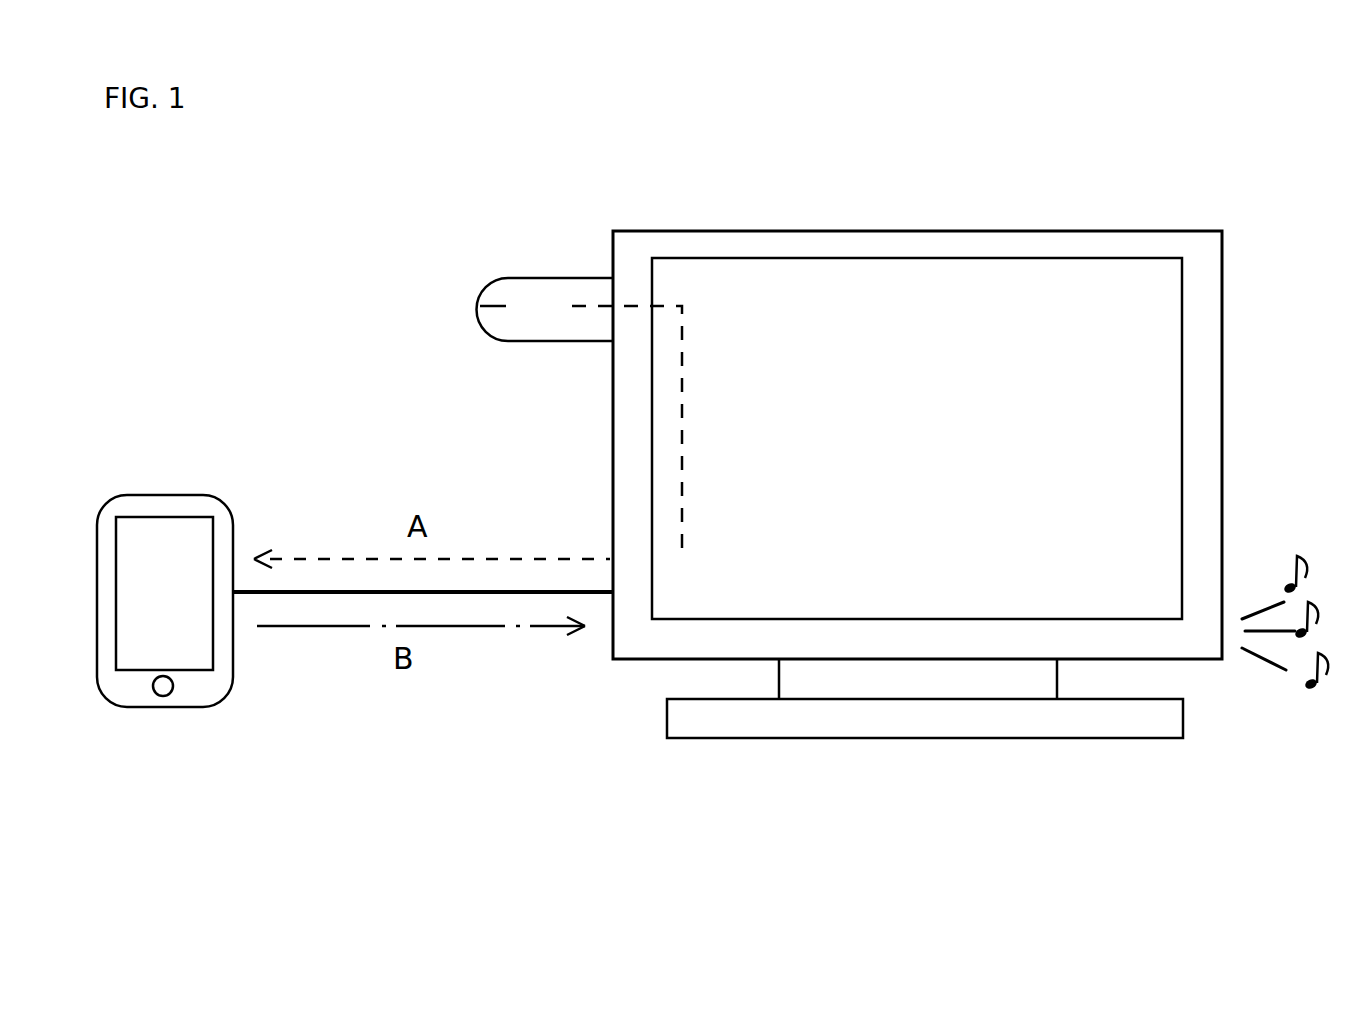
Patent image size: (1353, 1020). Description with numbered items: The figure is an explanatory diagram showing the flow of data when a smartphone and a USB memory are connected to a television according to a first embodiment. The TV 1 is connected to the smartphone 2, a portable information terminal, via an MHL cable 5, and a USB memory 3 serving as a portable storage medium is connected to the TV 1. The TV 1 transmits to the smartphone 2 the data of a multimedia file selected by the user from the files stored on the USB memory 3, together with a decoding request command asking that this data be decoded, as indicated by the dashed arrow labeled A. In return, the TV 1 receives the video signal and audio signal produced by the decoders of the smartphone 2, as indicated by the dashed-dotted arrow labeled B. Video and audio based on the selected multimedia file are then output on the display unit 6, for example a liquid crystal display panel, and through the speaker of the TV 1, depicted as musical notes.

The television 1 is at (948, 206).
The smartphone 2 is at (185, 470).
The USB memory 3 is at (480, 306).
The MHL cable 5 is at (251, 595).
The display unit 6 is at (1130, 385).